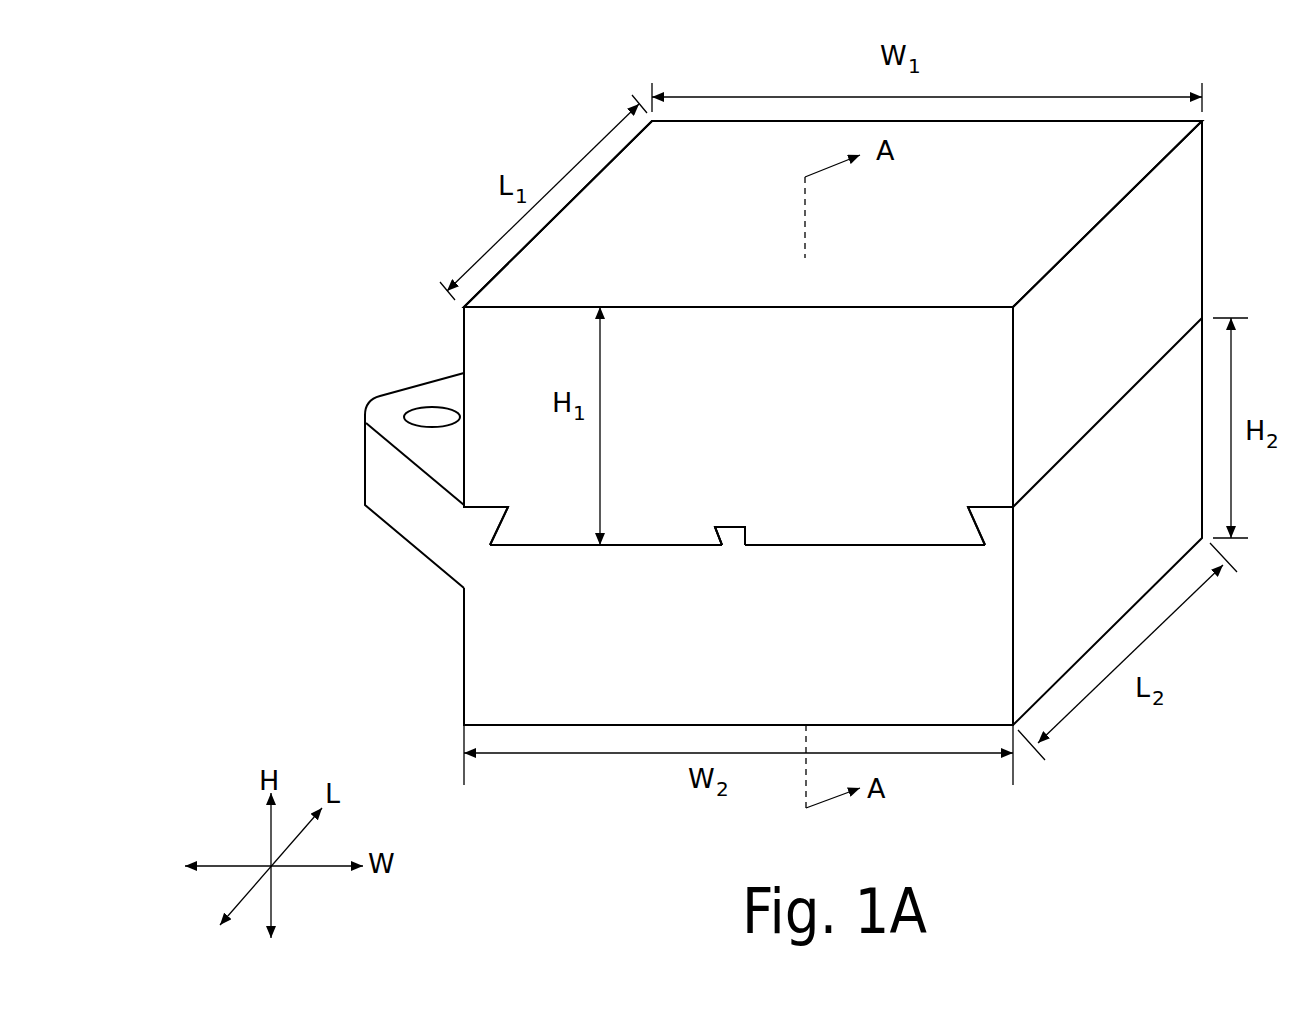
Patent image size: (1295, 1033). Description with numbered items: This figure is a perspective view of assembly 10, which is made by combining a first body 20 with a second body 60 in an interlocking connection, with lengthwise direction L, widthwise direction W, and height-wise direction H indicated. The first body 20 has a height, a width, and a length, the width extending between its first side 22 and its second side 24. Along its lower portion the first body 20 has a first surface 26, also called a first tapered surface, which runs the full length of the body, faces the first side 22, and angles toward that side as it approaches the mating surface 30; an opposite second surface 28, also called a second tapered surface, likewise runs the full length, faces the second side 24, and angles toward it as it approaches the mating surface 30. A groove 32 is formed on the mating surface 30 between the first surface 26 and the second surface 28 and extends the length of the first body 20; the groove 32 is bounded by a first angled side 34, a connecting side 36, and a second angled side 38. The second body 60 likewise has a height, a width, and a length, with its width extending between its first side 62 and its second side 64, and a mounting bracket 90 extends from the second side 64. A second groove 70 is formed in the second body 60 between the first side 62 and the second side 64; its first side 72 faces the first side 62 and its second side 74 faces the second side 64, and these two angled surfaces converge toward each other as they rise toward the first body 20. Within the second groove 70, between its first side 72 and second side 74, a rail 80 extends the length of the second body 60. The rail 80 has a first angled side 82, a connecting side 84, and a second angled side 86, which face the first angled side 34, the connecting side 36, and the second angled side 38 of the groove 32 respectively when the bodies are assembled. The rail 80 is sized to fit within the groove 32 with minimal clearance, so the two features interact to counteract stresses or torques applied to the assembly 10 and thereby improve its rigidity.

The assembly 10 is at (437, 110).
The first body 20 is at (833, 314).
The first side 22 is at (462, 334).
The second side 24 is at (1107, 314).
The first surface 26 is at (503, 530).
The second surface 28 is at (978, 529).
The mating surface 30 is at (817, 548).
The groove 32 is at (746, 526).
The first angled side 34 is at (714, 538).
The connecting side 36 is at (716, 527).
The second angled side 38 is at (756, 534).
The second body 60 is at (738, 616).
The first side 62 is at (1107, 521).
The second side 64 is at (462, 628).
The second groove 70 is at (880, 548).
The first side 72 is at (508, 507).
The second side 74 is at (968, 507).
The rail 80 is at (737, 550).
The first angled side 82 is at (713, 545).
The connecting side 84 is at (733, 543).
The second angled side 86 is at (747, 543).
The mounting bracket 90 is at (385, 415).